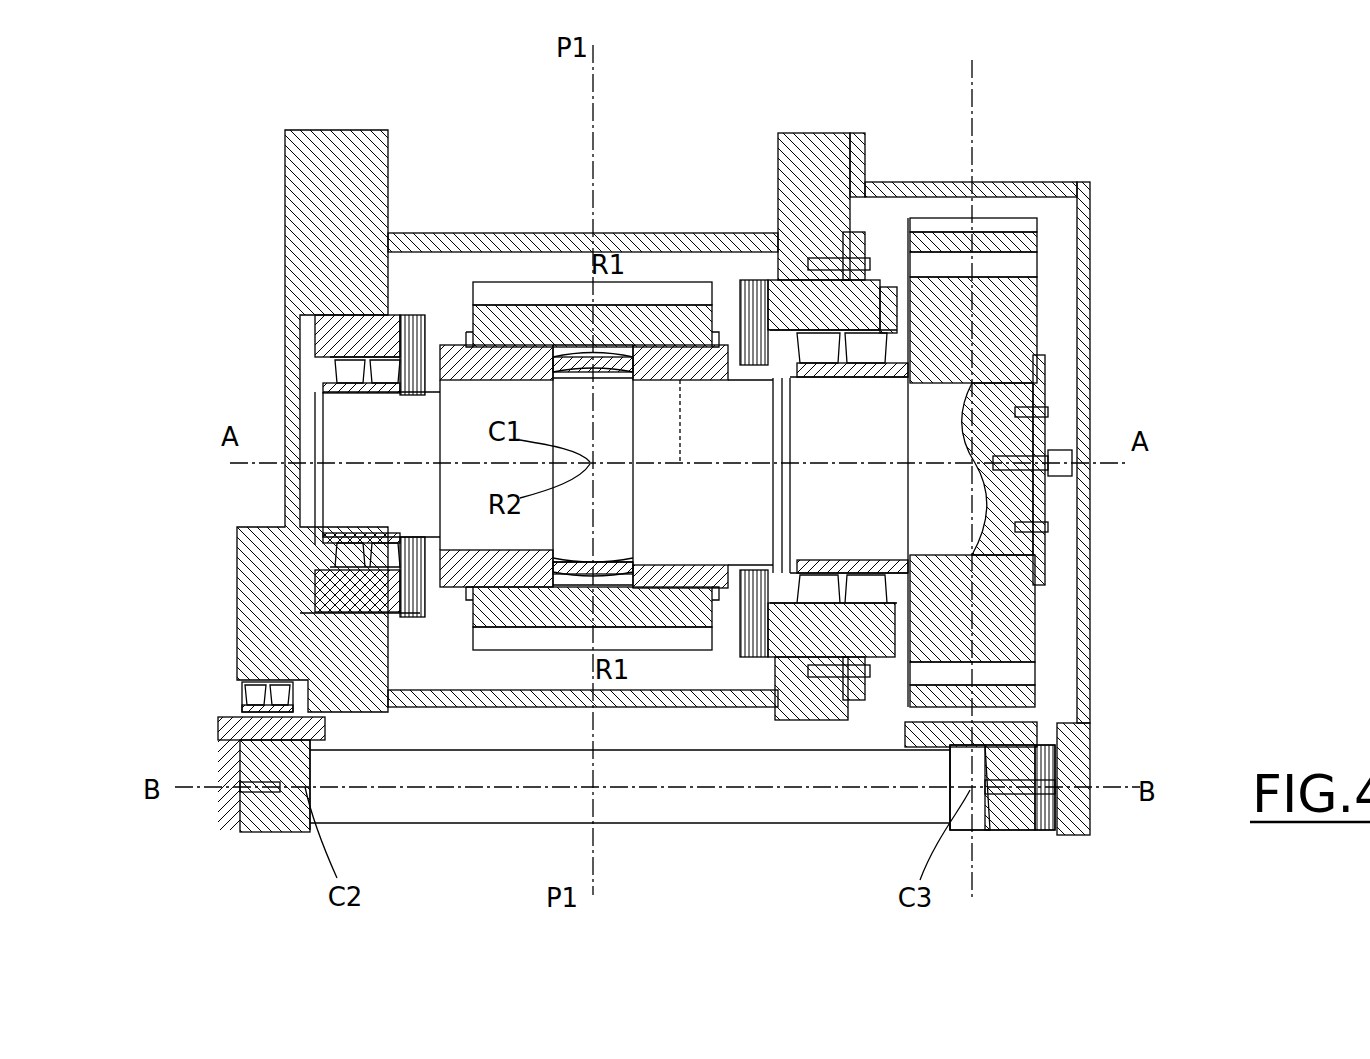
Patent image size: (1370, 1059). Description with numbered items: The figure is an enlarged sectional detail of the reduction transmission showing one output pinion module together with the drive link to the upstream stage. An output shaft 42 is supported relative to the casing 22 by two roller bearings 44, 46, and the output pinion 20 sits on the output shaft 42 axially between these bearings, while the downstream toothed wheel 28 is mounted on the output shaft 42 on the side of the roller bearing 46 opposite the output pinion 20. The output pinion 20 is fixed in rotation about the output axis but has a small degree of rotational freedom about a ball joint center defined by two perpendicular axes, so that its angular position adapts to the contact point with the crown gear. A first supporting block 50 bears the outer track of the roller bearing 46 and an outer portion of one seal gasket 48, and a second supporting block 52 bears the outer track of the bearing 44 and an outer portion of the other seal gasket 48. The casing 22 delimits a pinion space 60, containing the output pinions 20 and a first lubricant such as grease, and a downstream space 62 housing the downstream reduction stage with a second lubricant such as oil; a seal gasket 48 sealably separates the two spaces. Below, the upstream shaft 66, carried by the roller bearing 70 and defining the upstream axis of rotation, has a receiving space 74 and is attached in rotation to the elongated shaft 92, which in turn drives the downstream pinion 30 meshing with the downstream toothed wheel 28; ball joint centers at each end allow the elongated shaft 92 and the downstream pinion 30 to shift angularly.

The output pinion 20 is at (530, 625).
The casing 22 is at (832, 155).
The downstream toothed wheel 28 is at (1008, 240).
The downstream pinion 30 is at (1012, 728).
The output shaft 42 is at (611, 466).
The roller bearing 44 is at (330, 357).
The roller bearing 46 is at (780, 186).
The seal gasket 48 is at (427, 343).
The first supporting block 50 is at (820, 245).
The second supporting block 52 is at (367, 315).
The pinion space 60 is at (583, 256).
The downstream space 62 is at (1057, 313).
The upstream shaft 66 is at (228, 725).
The roller bearing 70 is at (253, 700).
The receiving space 74 is at (328, 742).
The elongated shaft 92 is at (740, 775).